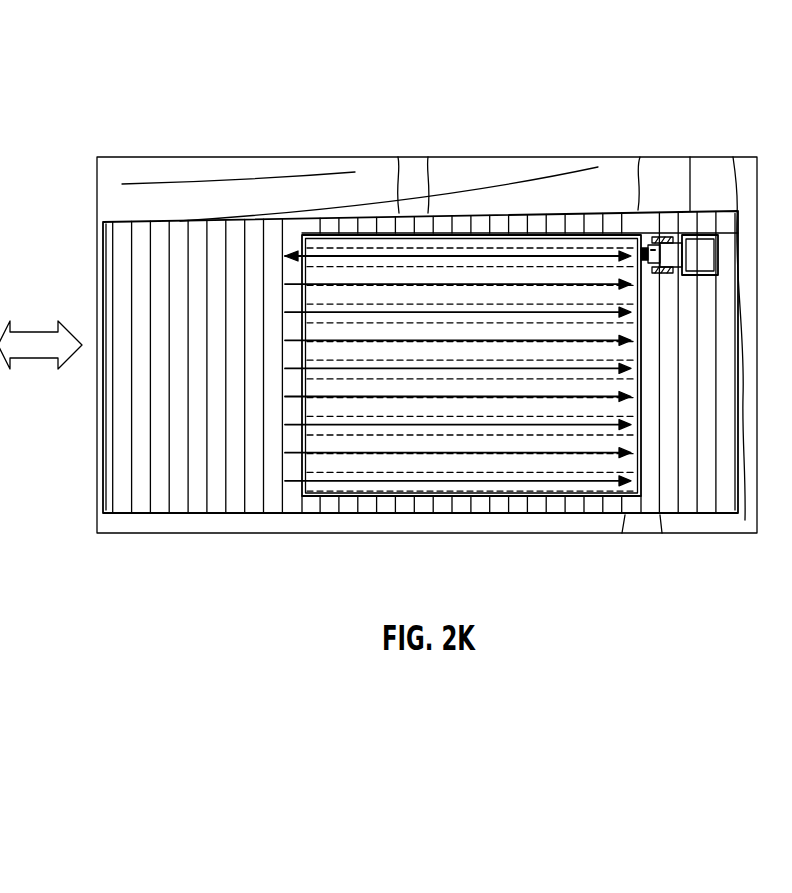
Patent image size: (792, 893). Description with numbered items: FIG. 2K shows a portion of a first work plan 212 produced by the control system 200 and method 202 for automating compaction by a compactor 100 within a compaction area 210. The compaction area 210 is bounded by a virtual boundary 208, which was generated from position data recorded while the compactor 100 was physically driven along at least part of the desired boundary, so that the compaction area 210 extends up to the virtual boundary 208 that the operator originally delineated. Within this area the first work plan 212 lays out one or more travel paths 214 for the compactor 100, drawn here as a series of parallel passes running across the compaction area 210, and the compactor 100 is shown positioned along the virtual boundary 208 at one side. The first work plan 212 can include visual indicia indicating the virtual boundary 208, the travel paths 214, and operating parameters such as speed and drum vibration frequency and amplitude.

The compactor 100 is at (697, 245).
The control system 200 is at (153, 77).
The method 202 is at (381, 134).
The virtual boundary 208 is at (498, 215).
The compaction area 210 is at (213, 240).
The first work plan 212 is at (558, 222).
The travel paths 214 is at (555, 450).